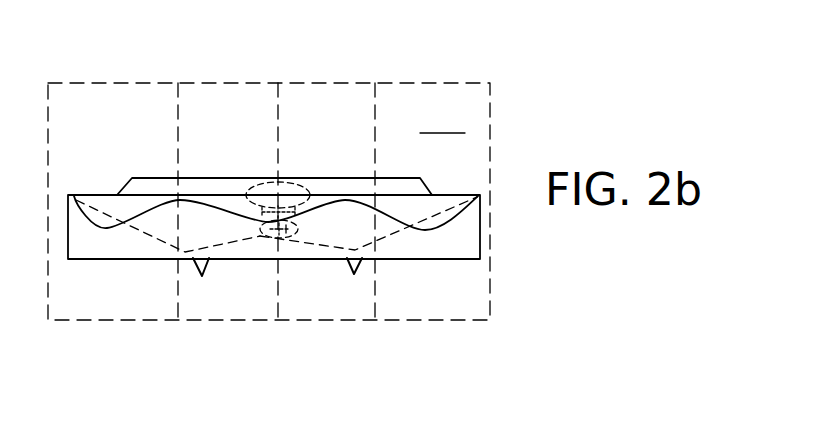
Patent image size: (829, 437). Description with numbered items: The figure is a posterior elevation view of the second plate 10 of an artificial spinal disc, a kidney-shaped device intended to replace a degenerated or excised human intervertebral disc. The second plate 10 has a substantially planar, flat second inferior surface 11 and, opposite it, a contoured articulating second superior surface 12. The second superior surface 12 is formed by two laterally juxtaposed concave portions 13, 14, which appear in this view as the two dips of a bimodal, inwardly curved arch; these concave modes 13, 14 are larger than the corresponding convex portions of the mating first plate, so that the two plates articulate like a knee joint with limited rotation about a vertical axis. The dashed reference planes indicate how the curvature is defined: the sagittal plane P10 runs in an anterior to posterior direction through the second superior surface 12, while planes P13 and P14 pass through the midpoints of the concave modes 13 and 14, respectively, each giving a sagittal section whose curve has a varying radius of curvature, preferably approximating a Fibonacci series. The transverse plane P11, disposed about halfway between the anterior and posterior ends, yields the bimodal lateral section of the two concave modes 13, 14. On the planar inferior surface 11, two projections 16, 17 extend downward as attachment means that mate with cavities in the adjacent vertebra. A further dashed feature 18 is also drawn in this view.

The second plate 10 is at (105, 296).
The second inferior surface 11 is at (443, 259).
The second superior surface 12 is at (116, 195).
The concave portion 13 is at (222, 246).
The concave portion 14 is at (392, 250).
The projection 16 is at (202, 276).
The projection 17 is at (354, 274).
The pivot post 18 is at (248, 228).
The sagittal plane P10 is at (286, 114).
The transverse plane P11 is at (445, 116).
The sagittal plane of first concave mode P13 is at (182, 95).
The sagittal plane of second concave mode P14 is at (377, 126).